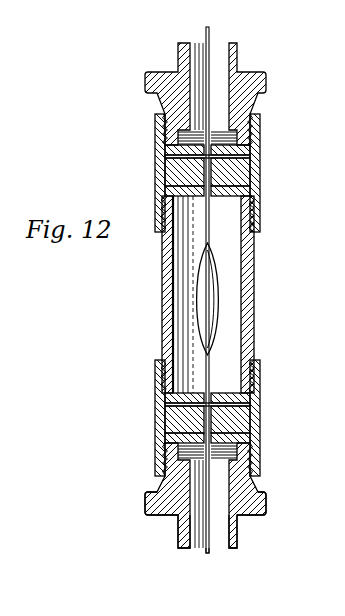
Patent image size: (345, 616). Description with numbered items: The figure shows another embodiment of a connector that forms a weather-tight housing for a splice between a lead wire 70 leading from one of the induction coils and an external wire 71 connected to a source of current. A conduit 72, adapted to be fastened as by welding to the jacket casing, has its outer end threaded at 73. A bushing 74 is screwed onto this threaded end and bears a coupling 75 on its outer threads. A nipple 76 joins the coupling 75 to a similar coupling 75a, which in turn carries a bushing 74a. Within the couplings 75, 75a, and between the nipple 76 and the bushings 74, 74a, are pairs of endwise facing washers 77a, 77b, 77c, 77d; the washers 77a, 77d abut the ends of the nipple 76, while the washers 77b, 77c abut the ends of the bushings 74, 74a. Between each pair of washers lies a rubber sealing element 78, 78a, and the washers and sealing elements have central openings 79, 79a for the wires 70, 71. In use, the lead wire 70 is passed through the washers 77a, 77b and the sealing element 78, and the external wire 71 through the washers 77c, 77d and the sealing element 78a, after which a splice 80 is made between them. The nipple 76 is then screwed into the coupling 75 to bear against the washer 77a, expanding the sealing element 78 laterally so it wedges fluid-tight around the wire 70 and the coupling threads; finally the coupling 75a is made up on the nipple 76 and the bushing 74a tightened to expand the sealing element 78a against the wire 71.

The lead wire 70 is at (214, 552).
The external wire 71 is at (212, 35).
The conduit 72 is at (236, 540).
The threaded outer end 73 is at (254, 484).
The bushing 74 is at (262, 505).
The bushing 74a is at (258, 83).
The coupling 75 is at (255, 421).
The coupling 75a is at (256, 176).
The nipple 76 is at (250, 292).
The washer 77a is at (255, 392).
The washer 77b is at (252, 437).
The washer 77c is at (258, 146).
The washer 77d is at (256, 192).
The rubber sealing element 78 is at (255, 406).
The rubber sealing element 78a is at (256, 159).
The opening 79 is at (215, 396).
The opening 79a is at (260, 120).
The splice 80 is at (209, 326).